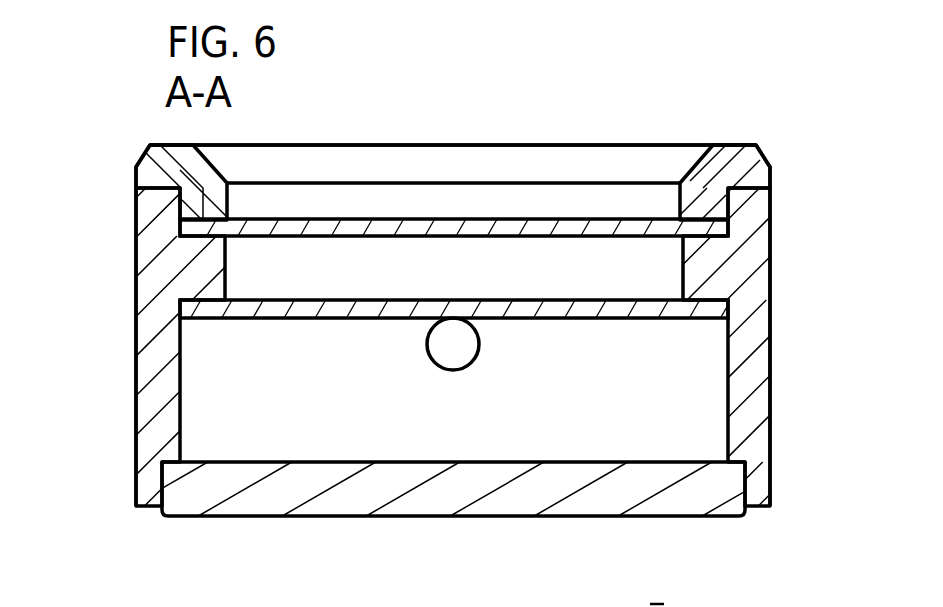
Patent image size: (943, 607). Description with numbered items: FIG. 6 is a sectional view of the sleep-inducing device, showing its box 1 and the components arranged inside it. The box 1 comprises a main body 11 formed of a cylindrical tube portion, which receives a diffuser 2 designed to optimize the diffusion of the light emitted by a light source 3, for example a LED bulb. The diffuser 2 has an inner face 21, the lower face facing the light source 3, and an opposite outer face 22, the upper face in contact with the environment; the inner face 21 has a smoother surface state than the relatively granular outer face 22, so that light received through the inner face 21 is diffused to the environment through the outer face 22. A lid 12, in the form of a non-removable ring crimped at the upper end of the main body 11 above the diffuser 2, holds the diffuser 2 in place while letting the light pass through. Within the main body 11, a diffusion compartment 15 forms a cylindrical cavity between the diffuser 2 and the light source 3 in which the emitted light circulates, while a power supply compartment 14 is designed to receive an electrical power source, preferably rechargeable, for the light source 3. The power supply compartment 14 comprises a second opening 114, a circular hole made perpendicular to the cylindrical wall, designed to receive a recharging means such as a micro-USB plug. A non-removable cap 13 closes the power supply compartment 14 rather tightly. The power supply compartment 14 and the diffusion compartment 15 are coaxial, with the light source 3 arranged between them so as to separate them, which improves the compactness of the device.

The box 1 is at (780, 187).
The main body 11 is at (753, 327).
The lid 12 is at (721, 160).
The cap 13 is at (512, 498).
The power supply compartment 14 is at (215, 400).
The diffusion compartment 15 is at (278, 260).
The diffuser 2 is at (616, 232).
The inner face 21 is at (597, 242).
The outer face 22 is at (583, 214).
The light source 3 is at (280, 306).
The second opening 114 is at (452, 345).